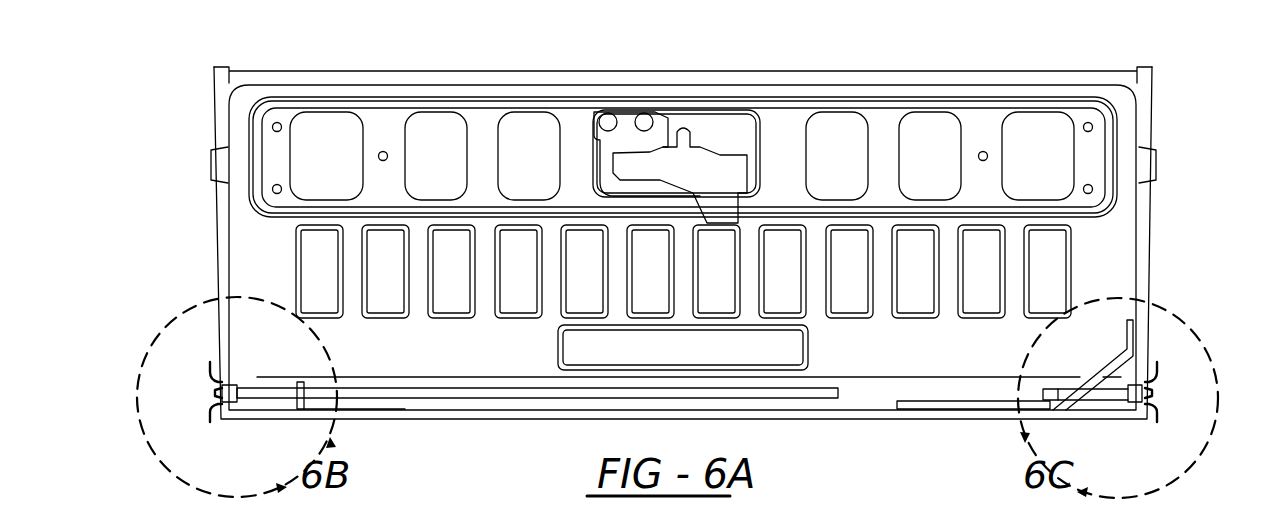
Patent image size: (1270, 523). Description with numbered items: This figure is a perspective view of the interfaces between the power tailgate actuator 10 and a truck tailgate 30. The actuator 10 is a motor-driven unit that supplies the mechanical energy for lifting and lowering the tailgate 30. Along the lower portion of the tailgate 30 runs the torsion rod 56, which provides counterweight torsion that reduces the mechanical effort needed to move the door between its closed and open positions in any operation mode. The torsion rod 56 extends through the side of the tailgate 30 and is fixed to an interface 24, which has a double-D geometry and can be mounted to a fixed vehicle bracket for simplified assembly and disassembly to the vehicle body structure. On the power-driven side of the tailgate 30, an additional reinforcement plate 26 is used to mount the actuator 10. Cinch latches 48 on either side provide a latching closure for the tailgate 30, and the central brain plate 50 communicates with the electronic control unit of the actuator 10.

The power tailgate actuator 10 is at (893, 383).
The tailgate 30 is at (808, 93).
The central brain plate 50 is at (705, 163).
The torsion rod 56 is at (547, 390).
The reinforcement plate 26 is at (1110, 362).
The cinch latches 48 is at (217, 160).
The interface 24 is at (198, 363).